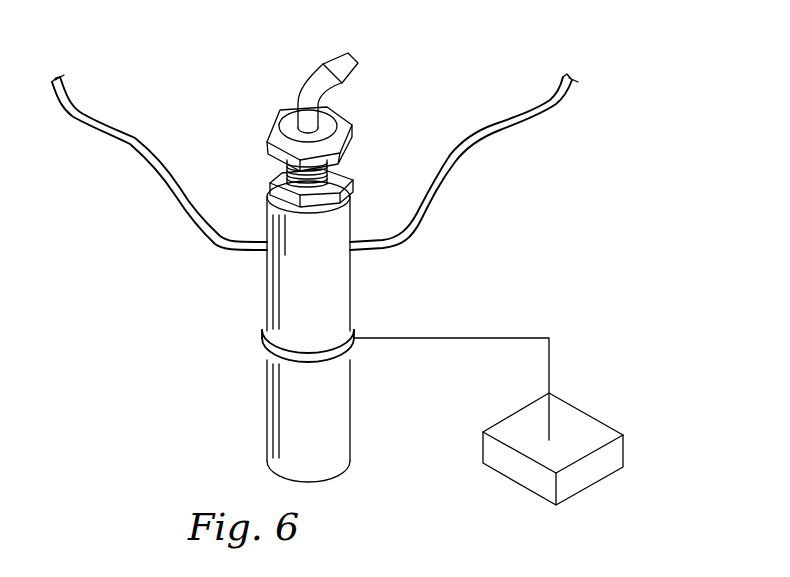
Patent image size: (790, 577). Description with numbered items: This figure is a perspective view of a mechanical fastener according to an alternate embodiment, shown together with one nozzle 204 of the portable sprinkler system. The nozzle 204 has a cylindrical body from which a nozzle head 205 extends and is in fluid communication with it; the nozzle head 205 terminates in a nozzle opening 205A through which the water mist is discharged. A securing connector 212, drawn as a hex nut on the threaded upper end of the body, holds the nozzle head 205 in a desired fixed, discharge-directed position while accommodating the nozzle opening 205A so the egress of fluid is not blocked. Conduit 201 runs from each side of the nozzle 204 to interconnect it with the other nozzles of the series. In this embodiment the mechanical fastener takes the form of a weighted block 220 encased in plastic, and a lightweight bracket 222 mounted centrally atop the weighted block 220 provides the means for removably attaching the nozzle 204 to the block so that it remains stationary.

The conduit 201 is at (157, 160).
The nozzle 204 is at (350, 296).
The nozzle head 205 is at (336, 54).
The nozzle opening 205A is at (354, 54).
The securing connector 212 is at (351, 147).
The weighted block 220 is at (623, 449).
The lightweight bracket 222 is at (551, 354).